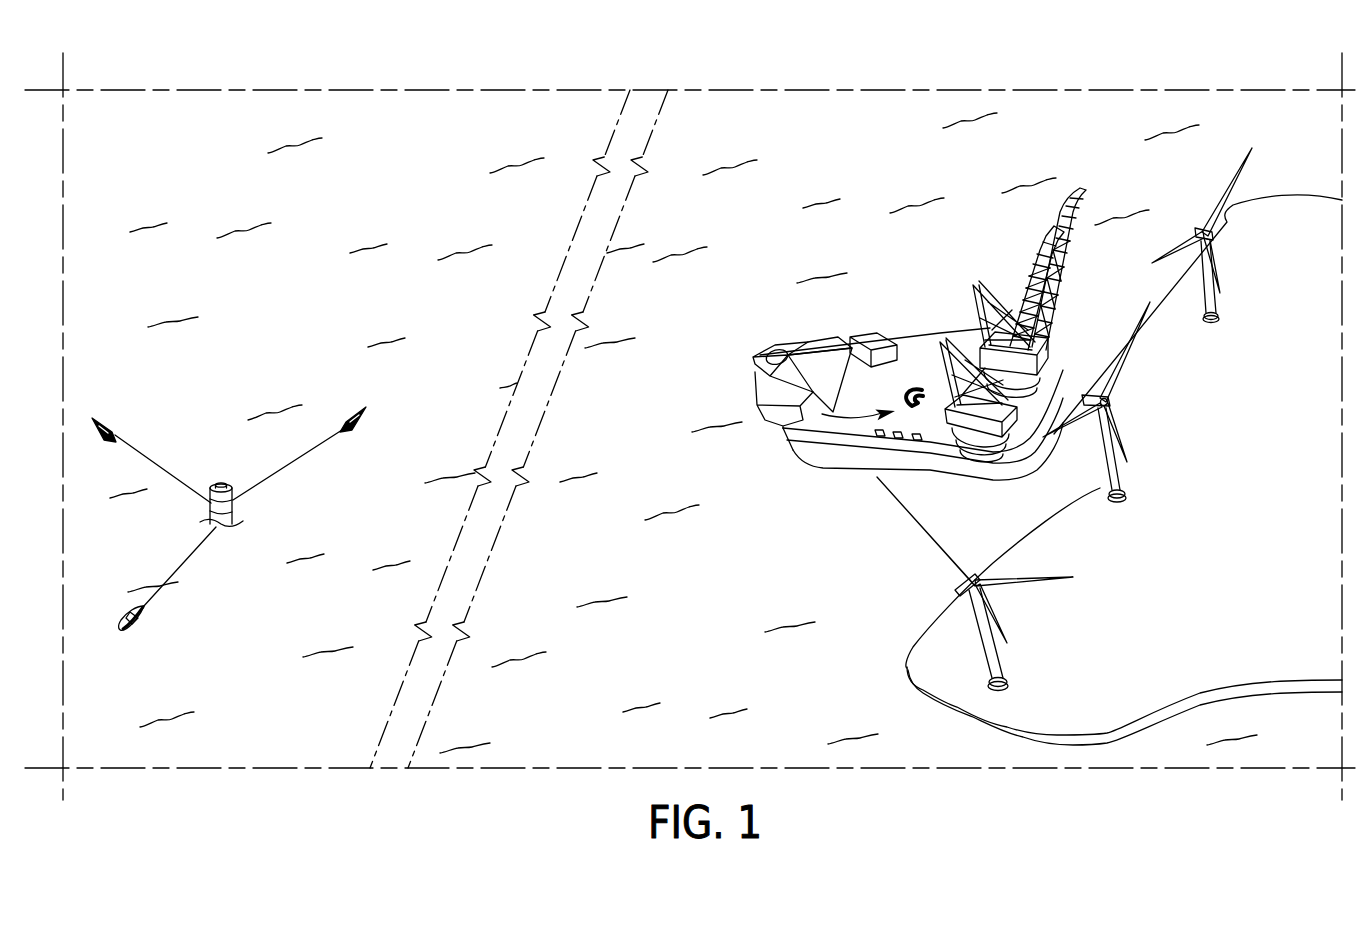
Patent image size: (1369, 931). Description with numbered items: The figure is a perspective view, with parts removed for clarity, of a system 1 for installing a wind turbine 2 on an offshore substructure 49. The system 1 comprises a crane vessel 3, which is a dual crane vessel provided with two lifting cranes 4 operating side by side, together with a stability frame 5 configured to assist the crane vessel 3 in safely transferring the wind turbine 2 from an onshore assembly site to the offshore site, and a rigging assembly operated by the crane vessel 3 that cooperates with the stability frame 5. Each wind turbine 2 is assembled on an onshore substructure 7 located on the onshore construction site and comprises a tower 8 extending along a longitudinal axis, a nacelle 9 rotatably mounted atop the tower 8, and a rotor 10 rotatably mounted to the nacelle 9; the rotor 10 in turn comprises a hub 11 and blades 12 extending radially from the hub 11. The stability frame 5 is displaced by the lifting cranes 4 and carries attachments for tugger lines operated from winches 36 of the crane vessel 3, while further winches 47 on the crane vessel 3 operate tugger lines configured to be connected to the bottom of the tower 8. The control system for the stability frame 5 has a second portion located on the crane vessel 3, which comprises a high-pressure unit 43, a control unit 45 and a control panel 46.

The system for installation of a wind turbine 1 is at (888, 138).
The wind turbine 2 is at (1240, 265).
The crane vessel 3 is at (876, 302).
The lifting crane 4 is at (1063, 182).
The stability frame 5 is at (826, 418).
The onshore substructure 7 is at (1215, 318).
The tower 8 is at (1113, 497).
The nacelle 9 is at (1090, 393).
The rotor 10 is at (1155, 389).
The hub 11 is at (1112, 404).
The blades 12 is at (1137, 333).
The winches 36 is at (1056, 327).
The high-pressure unit 43 is at (916, 441).
The control unit 45 is at (878, 436).
The control panel 46 is at (898, 438).
The winches 47 is at (1056, 372).
The offshore substructure 49 is at (220, 484).